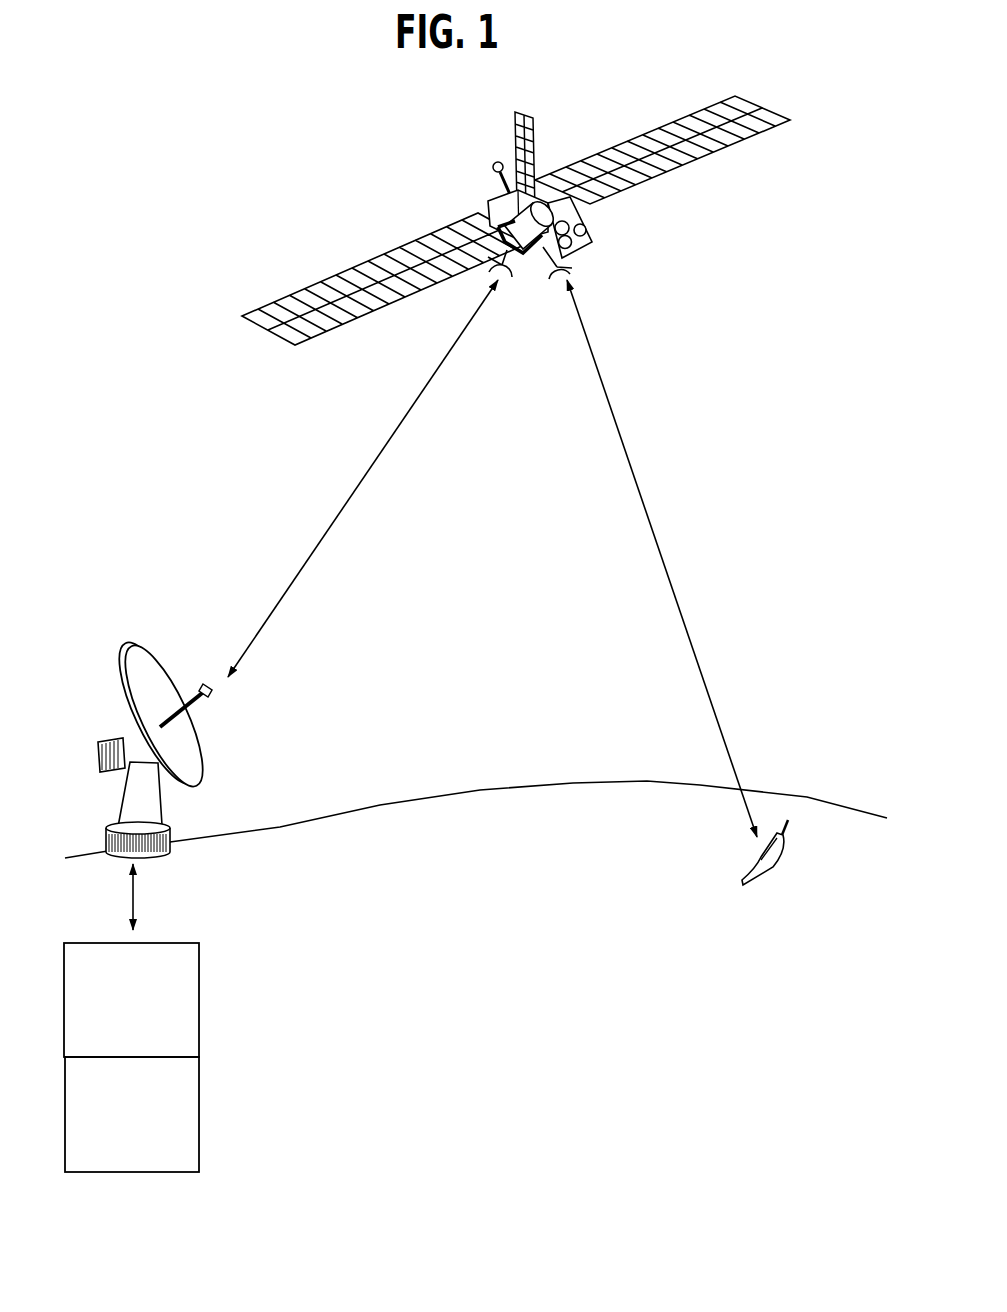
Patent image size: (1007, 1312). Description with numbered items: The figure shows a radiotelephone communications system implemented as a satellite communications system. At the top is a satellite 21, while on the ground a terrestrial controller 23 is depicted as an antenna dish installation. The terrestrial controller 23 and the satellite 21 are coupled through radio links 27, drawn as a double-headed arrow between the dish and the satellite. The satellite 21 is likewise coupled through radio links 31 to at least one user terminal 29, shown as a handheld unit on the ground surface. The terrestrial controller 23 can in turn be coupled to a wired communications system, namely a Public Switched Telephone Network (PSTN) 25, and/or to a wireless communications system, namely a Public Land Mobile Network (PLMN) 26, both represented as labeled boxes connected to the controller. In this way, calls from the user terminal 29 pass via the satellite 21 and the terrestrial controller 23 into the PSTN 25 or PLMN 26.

The satellite 21 is at (513, 208).
The terrestrial controller 23 is at (163, 815).
The Public Switched Telephone Network (PSTN) 25 is at (200, 952).
The Public Land Mobile Network (PLMN) 26 is at (200, 1098).
The radio links 27 is at (335, 522).
The user terminal 29 is at (773, 867).
The radio links 31 is at (647, 507).